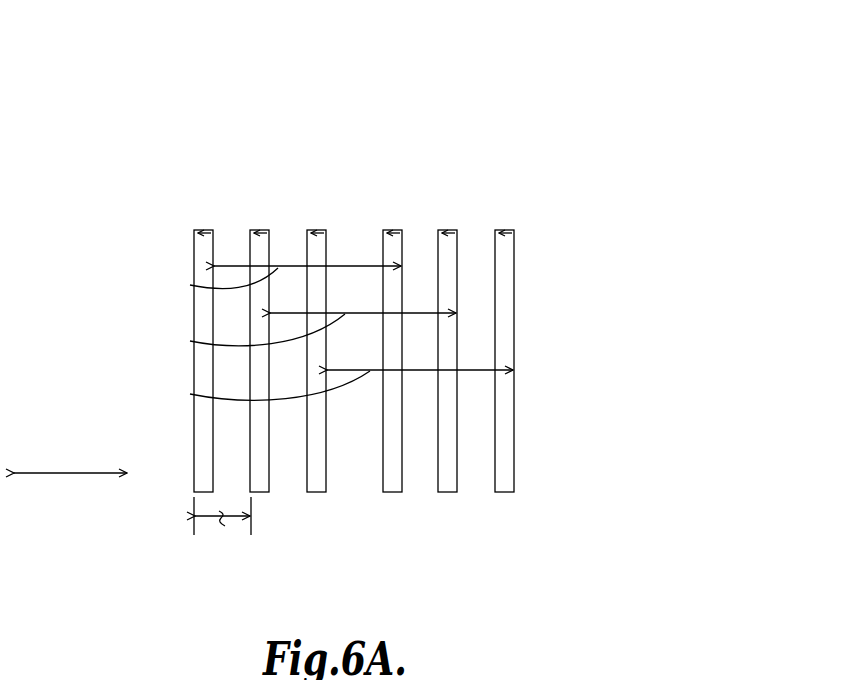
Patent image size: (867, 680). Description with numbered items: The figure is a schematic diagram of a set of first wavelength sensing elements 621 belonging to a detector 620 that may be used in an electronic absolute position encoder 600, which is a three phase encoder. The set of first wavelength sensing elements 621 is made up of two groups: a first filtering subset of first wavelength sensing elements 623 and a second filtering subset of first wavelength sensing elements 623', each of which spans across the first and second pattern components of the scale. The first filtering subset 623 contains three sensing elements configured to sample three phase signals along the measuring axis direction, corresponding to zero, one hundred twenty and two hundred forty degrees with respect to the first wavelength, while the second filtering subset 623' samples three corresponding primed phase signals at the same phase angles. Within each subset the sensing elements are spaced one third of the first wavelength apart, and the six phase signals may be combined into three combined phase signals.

The electronic absolute position encoder 600 is at (341, 290).
The detector 620 is at (504, 74).
The set of first wavelength sensing elements 621 is at (542, 118).
The first filtering subset of first wavelength sensing elements 623 is at (265, 309).
The second filtering subset of first wavelength sensing elements 623' is at (447, 309).